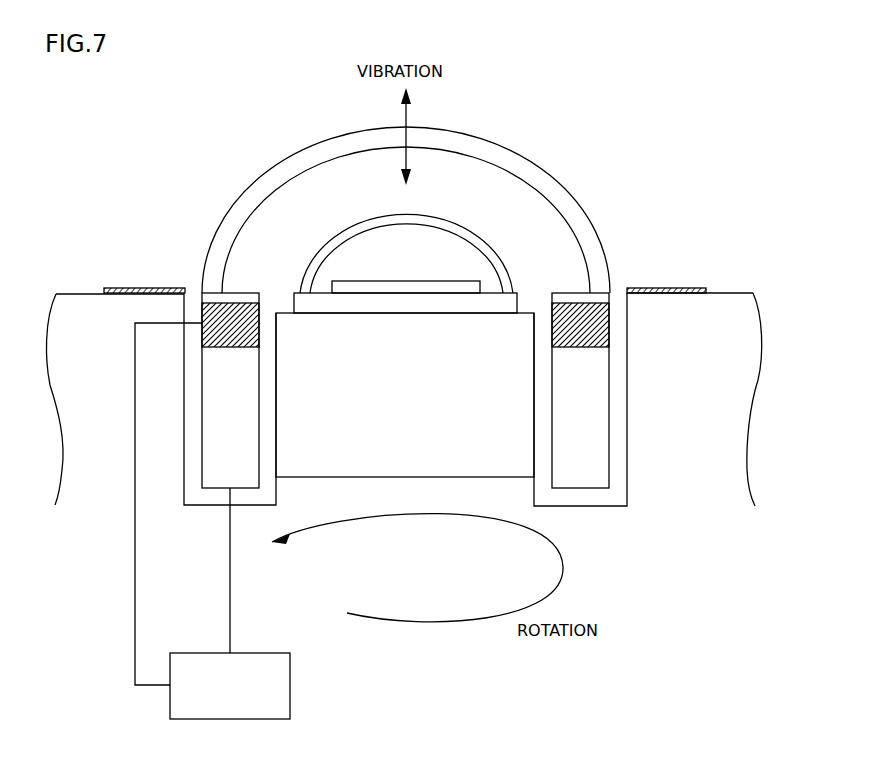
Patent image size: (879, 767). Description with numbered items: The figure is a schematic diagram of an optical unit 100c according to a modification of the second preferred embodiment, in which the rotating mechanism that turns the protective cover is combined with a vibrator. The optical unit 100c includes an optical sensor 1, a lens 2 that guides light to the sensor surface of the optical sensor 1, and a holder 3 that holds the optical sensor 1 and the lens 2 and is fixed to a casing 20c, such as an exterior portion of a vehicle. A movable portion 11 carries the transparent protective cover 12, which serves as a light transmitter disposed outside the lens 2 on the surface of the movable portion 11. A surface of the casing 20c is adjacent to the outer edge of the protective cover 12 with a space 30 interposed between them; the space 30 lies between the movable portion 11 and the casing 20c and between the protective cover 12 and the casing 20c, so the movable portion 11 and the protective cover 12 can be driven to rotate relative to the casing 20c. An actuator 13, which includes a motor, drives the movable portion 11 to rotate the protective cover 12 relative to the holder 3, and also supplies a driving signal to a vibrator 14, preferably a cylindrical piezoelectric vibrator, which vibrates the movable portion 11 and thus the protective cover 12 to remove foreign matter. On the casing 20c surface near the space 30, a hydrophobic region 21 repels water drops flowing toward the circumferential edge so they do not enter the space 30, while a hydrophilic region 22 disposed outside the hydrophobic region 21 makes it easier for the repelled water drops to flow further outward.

The optical unit 100c is at (539, 114).
The protective cover 12 is at (447, 139).
The lens 2 is at (477, 235).
The optical sensor 1 is at (466, 287).
The holder 3 is at (510, 405).
The movable portion 11 is at (597, 371).
The vibrator 14 is at (597, 322).
The casing 20c is at (734, 305).
The hydrophobic region 21 is at (163, 288).
The hydrophilic region 22 is at (125, 288).
The space 30 is at (196, 286).
The actuator 13 is at (245, 653).